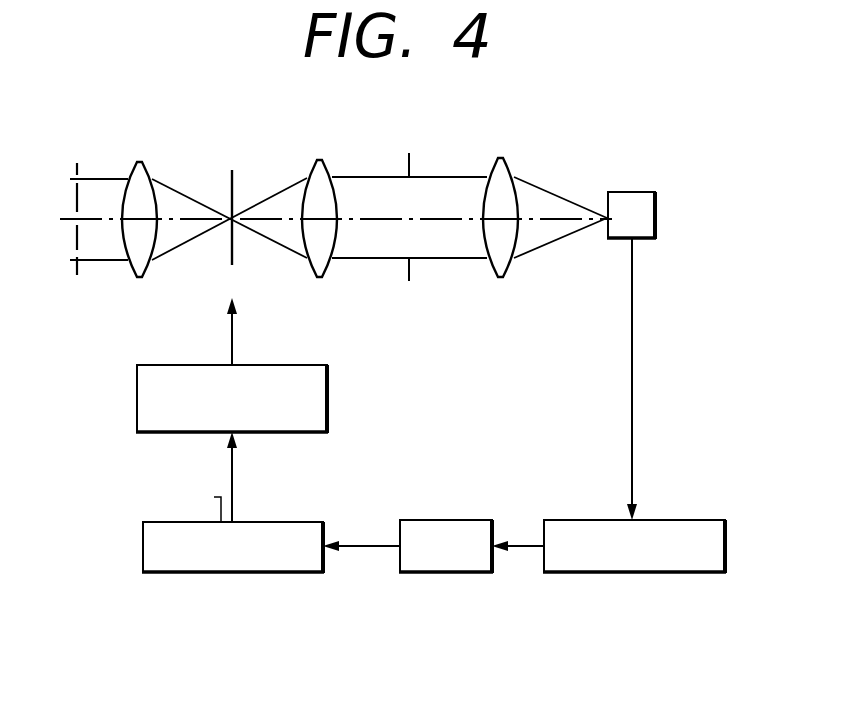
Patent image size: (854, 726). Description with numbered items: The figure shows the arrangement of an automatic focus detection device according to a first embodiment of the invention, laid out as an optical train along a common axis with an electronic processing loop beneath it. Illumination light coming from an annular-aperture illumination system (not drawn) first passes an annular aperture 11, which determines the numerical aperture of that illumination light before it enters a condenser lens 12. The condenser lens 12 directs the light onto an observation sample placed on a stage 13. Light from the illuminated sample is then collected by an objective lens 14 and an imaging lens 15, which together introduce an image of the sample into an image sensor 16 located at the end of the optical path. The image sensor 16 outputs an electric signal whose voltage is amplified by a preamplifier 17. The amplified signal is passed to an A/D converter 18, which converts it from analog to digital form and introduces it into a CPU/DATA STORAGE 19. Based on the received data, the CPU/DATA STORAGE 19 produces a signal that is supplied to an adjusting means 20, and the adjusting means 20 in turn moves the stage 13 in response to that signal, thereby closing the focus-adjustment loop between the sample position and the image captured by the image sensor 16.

The annular aperture 11 is at (77, 275).
The condenser lens 12 is at (140, 160).
The stage 13 is at (232, 171).
The objective lens 14 is at (318, 160).
The imaging lens 15 is at (500, 158).
The image sensor 16 is at (630, 194).
The preamplifier 17 is at (633, 573).
The A/D converter 18 is at (445, 573).
The CPU/DATA STORAGE 19 is at (236, 573).
The adjusting means 20 is at (137, 392).